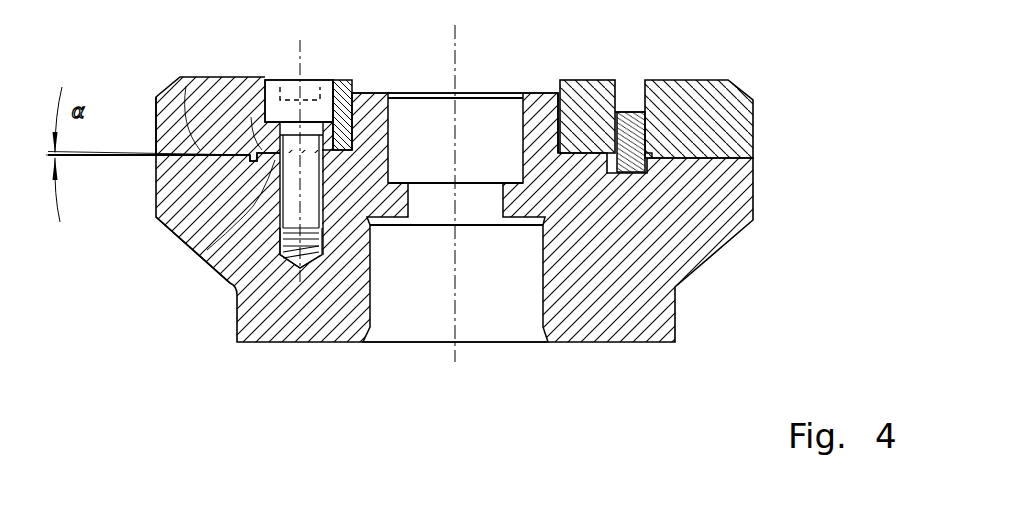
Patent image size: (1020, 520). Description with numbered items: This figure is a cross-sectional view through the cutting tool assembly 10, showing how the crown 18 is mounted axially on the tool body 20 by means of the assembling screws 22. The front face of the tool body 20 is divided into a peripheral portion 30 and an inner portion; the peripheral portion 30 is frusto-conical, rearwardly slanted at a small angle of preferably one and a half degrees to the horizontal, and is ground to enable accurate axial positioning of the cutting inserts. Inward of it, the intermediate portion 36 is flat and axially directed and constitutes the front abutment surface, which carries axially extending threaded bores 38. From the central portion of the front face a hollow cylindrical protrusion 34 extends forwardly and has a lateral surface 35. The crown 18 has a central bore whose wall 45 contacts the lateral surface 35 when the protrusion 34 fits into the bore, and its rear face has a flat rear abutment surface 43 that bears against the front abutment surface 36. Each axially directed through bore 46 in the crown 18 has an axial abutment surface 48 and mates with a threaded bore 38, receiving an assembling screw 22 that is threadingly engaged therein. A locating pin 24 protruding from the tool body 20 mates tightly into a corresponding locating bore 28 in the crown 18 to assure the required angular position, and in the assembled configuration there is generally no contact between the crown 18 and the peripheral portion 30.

The cutting tool assembly 10 is at (782, 41).
The crown 18 is at (732, 133).
The tool body 20 is at (682, 243).
The assembling screw 22 is at (298, 98).
The locating pin 24 is at (633, 128).
The locating bore 28 is at (633, 112).
The peripheral portion 30 is at (172, 85).
The hollow cylindrical protrusion 34 is at (542, 122).
The lateral surface 35 is at (566, 100).
The intermediate portion 36 is at (255, 145).
The threaded bore 38 is at (282, 256).
The rear abutment surface 43 is at (208, 250).
The wall 45 is at (355, 92).
The through bore 46 is at (273, 78).
The axial abutment surface 48 is at (331, 78).